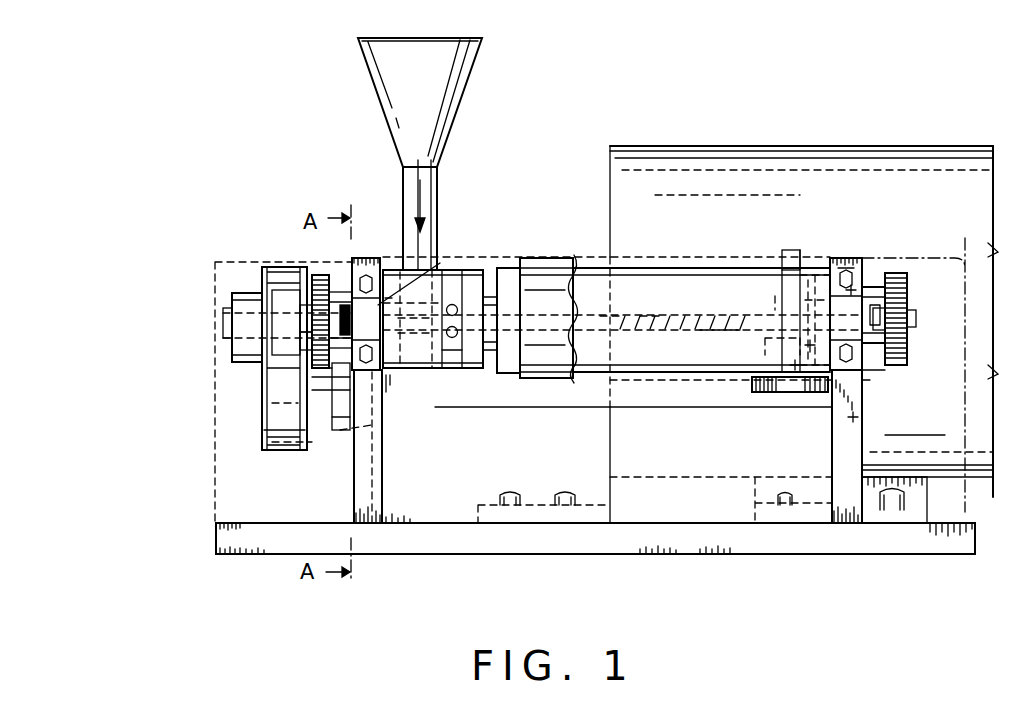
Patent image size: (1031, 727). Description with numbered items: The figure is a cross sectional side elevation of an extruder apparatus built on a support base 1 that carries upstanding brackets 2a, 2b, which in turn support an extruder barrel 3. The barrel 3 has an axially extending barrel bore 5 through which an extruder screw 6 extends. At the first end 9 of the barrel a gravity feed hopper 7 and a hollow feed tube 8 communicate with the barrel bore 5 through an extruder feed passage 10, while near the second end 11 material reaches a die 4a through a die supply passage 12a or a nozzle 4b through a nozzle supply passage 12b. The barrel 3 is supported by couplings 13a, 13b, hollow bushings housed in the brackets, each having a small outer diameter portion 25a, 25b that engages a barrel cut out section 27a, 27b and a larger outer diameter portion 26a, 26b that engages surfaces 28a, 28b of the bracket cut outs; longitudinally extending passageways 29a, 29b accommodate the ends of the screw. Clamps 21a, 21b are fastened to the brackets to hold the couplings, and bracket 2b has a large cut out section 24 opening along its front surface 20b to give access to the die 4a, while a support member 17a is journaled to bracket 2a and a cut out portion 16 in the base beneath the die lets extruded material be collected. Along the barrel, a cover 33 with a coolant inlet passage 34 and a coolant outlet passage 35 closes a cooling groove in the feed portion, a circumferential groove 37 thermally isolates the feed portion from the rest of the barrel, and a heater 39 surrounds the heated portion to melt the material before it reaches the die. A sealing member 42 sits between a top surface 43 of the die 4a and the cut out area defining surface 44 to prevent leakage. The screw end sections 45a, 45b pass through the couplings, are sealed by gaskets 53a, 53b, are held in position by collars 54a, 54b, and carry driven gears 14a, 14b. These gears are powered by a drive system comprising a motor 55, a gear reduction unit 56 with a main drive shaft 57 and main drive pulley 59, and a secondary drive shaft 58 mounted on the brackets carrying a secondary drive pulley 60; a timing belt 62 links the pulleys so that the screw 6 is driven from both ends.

The support base 1 is at (228, 538).
The upstanding bracket 2a is at (356, 476).
The upstanding bracket 2b is at (842, 448).
The extruder barrel 3 is at (580, 285).
The die 4a is at (807, 372).
The nozzle 4b is at (813, 292).
The barrel bore 5 is at (641, 314).
The extruder screw 6 is at (665, 315).
The gravity feed hopper 7 is at (380, 72).
The hollow feed tube 8 is at (406, 195).
The first end 9 is at (372, 283).
The extruder feed passage 10 is at (441, 300).
The second end 11 is at (826, 300).
The die supply passage 12a is at (730, 325).
The nozzle supply passage 12b is at (782, 297).
The coupling 13a is at (378, 300).
The coupling 13b is at (843, 266).
The driven gear 14a is at (318, 283).
The driven gear 14b is at (897, 284).
The cut out portion 16 is at (717, 540).
The support member 17a is at (585, 444).
The front surface 20b is at (865, 488).
The clamp 21a is at (362, 283).
The clamp 21b is at (864, 382).
The large cut out section 24 is at (858, 417).
The small outer diameter portion 25a is at (398, 320).
The small outer diameter portion 25b is at (778, 277).
The larger outer diameter portion 26a is at (433, 270).
The larger outer diameter portion 26b is at (852, 268).
The barrel cut out section 27a is at (400, 268).
The barrel cut out section 27b is at (818, 292).
The surface 28a is at (381, 404).
The surface 28b is at (866, 358).
The longitudinally extending passageway 29a is at (392, 352).
The longitudinally extending passageway 29b is at (812, 308).
The cover 33 is at (452, 372).
The coolant inlet passage 34 is at (456, 340).
The coolant outlet passage 35 is at (456, 305).
The circumferential groove 37 is at (493, 298).
The heater 39 is at (530, 262).
The sealing member 42 is at (768, 340).
The top surface 43 is at (760, 380).
The cut out area defining surface 44 is at (793, 366).
The end section 45a is at (300, 322).
The end section 45b is at (915, 314).
The gasket 53a is at (612, 407).
The gasket 53b is at (877, 285).
The collar 54a is at (315, 348).
The collar 54b is at (882, 312).
The motor 55 is at (863, 153).
The gear reduction unit 56 is at (372, 488).
The main drive shaft 57 is at (345, 405).
The secondary drive shaft 58 is at (224, 310).
The main drive pulley 59 is at (264, 430).
The secondary drive pulley 60 is at (264, 282).
The timing belt 62 is at (285, 350).